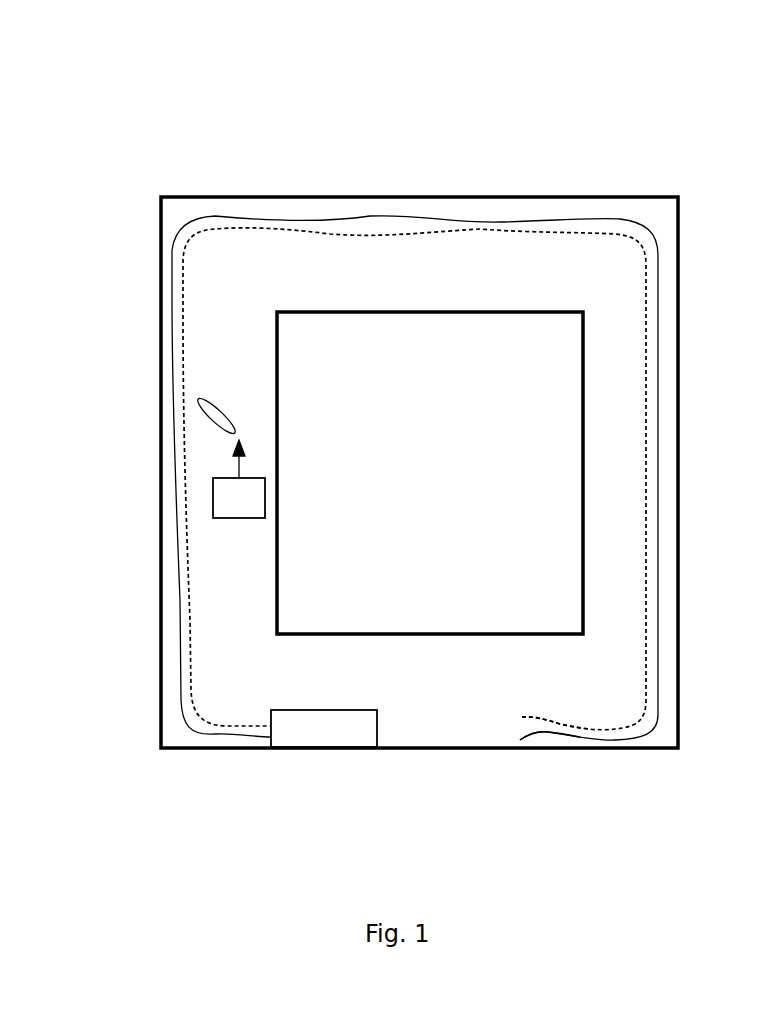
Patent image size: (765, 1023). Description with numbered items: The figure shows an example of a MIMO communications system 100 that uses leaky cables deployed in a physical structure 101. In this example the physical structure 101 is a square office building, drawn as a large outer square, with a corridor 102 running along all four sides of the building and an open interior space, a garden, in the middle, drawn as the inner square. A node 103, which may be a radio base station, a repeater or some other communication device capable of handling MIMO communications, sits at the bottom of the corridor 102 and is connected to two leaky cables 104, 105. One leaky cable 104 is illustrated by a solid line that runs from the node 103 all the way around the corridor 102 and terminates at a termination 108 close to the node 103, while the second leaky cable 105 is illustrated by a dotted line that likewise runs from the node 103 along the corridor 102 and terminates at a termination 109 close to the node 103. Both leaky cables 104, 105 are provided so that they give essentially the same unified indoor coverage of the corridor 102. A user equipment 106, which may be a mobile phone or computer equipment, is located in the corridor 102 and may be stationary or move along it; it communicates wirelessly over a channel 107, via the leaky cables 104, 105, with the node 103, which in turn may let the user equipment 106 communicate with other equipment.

The MIMO communications system 100 is at (166, 124).
The physical structure 101 is at (550, 197).
The corridor 102 is at (172, 207).
The node 103 is at (322, 737).
The leaky cable 104 is at (182, 625).
The second leaky cable 105 is at (188, 663).
The user equipment 106 is at (213, 506).
The channel 107 is at (198, 400).
The termination of first leaky cable 108 is at (563, 733).
The termination of second leaky cable 109 is at (533, 718).